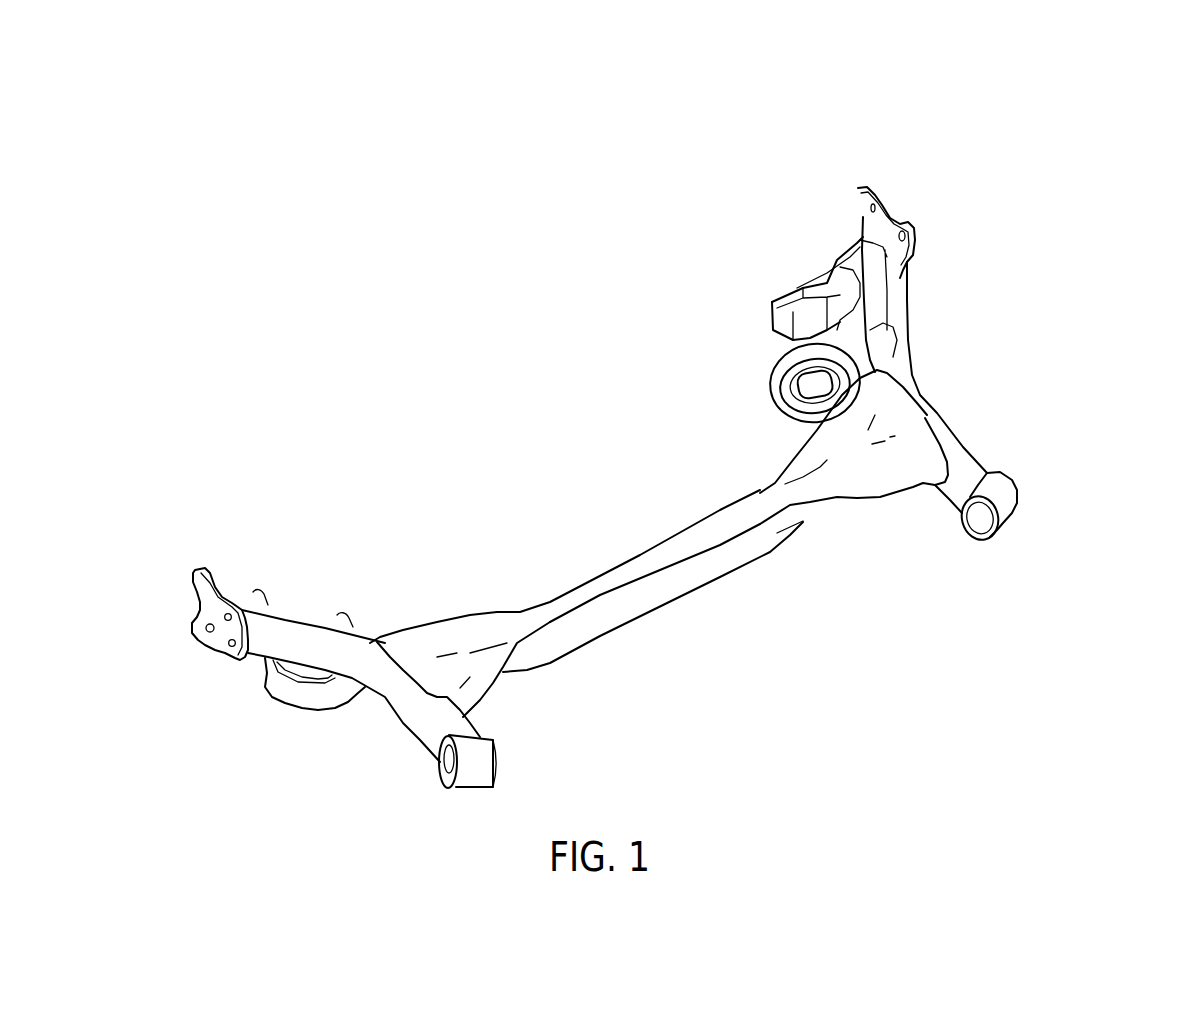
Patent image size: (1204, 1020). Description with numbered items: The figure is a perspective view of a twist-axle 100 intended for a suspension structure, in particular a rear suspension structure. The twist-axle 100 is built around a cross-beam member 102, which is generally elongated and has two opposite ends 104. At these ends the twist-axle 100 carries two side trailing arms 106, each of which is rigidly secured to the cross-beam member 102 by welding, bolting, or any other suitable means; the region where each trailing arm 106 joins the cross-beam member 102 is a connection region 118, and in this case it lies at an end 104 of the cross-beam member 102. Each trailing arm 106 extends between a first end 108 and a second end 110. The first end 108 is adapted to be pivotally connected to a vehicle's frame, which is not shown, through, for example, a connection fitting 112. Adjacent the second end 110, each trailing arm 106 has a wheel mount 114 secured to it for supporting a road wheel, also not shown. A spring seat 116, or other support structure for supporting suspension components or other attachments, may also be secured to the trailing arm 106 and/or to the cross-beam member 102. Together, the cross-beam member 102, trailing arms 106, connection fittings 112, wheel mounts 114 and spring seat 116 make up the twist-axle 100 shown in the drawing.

The twist-axle 100 is at (362, 356).
The cross-beam member 102 is at (610, 583).
The end of cross-beam member 104 is at (420, 637).
The trailing arm 106 is at (322, 637).
The first end 108 is at (1040, 455).
The second end 110 is at (948, 166).
The connection fitting 112 is at (988, 517).
The wheel mount 114 is at (863, 187).
The spring seat 116 is at (773, 377).
The connection region 118 is at (433, 673).